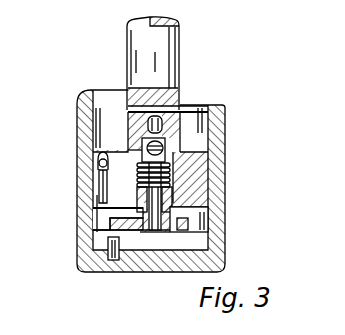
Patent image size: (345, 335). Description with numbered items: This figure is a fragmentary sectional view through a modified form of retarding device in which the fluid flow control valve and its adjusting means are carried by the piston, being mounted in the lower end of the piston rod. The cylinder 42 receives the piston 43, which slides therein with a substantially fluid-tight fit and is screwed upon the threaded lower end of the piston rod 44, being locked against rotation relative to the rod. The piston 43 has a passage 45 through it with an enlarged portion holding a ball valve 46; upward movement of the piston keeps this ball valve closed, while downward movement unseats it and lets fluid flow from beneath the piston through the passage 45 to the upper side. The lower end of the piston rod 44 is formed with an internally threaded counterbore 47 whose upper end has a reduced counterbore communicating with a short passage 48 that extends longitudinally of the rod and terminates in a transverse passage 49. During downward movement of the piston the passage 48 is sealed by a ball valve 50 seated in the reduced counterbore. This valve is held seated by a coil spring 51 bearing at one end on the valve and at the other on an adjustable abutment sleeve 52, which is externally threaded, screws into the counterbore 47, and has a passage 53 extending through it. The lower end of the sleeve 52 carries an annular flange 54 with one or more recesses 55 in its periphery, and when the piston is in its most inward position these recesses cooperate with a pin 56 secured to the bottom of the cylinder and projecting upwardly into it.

The cylinder 42 is at (221, 138).
The piston 43 is at (204, 190).
The piston rod 44 is at (176, 63).
The passage 45 is at (98, 208).
The ball valve 46 is at (104, 166).
The internally threaded counterbore 47 is at (178, 172).
The short passage 48 is at (162, 125).
The transverse passage 49 is at (168, 112).
The ball valve 50 is at (147, 126).
The coil spring 51 is at (167, 152).
The adjustable abutment sleeve 52 is at (172, 212).
The passage 53 is at (168, 210).
The annular flange 54 is at (180, 224).
The recess 55 is at (108, 233).
The pin 56 is at (112, 257).